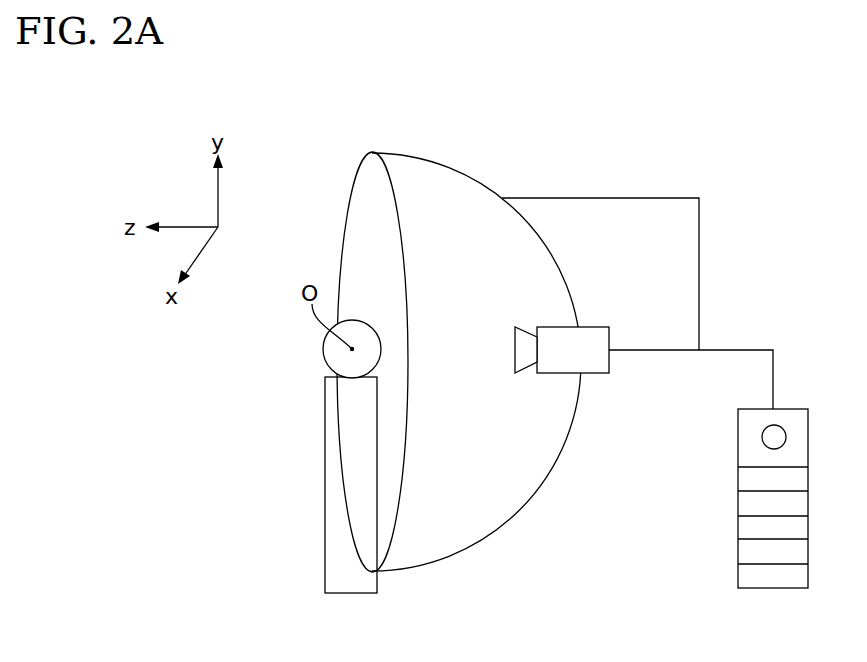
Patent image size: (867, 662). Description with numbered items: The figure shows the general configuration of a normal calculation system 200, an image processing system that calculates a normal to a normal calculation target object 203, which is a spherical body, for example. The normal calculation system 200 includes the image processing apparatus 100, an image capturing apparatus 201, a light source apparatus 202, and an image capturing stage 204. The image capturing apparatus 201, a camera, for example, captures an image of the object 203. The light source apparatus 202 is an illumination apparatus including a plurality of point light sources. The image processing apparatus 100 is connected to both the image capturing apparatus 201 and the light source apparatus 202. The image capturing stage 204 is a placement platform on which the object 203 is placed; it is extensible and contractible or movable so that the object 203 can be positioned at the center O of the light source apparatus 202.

The image processing apparatus 100 is at (790, 409).
The normal calculation system 200 is at (686, 110).
The image capturing apparatus 201 is at (592, 327).
The light source apparatus 202 is at (465, 172).
The normal calculation target object 203 is at (323, 349).
The image capturing stage 204 is at (325, 483).